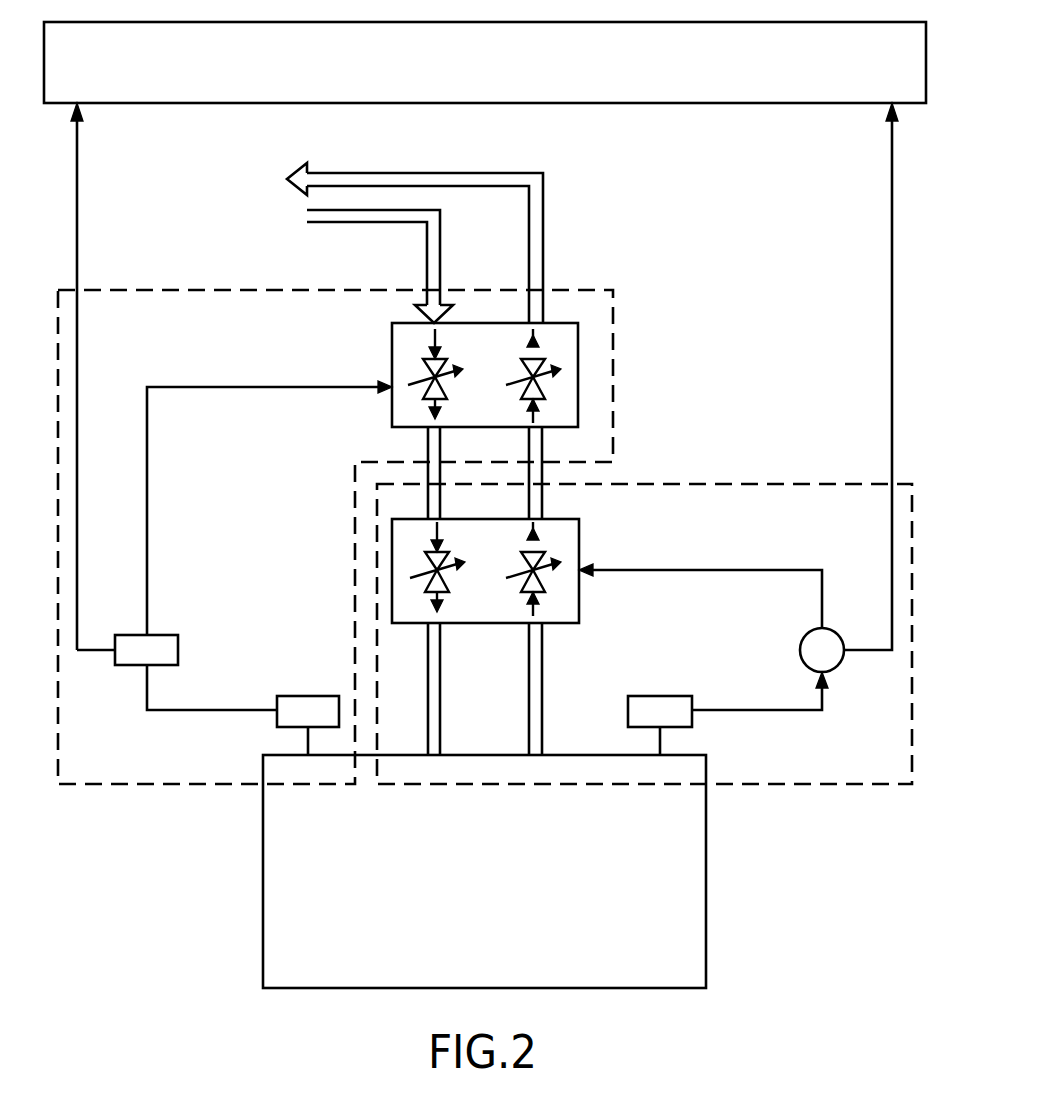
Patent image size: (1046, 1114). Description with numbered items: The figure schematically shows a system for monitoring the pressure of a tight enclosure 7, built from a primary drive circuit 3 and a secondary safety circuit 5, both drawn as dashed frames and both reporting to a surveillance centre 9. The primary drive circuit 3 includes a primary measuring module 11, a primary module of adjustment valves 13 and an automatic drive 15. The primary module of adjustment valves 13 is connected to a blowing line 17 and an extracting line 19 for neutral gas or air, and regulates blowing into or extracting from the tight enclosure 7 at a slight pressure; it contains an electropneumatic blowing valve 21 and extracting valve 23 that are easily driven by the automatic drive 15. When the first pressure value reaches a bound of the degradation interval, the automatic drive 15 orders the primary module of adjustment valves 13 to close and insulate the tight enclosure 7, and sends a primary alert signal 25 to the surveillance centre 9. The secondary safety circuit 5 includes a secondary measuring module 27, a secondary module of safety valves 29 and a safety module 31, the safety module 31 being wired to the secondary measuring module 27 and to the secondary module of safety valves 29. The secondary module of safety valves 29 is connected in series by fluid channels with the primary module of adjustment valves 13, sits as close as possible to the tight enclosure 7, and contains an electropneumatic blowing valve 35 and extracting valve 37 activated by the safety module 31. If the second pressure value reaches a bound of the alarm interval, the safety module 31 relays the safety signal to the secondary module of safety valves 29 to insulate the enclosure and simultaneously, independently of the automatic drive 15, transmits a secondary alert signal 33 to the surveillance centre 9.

The primary drive circuit 3 is at (110, 794).
The secondary safety circuit 5 is at (876, 794).
The tight enclosure 7 is at (263, 887).
The surveillance centre 9 is at (800, 105).
The primary measuring module 11 is at (310, 698).
The primary module of adjustment valves 13 is at (579, 346).
The automatic drive 15 is at (167, 650).
The blowing line 17 is at (363, 222).
The extracting line 19 is at (455, 172).
The blowing valve 21 is at (430, 386).
The extracting valve 23 is at (545, 383).
The primary alert signal 25 is at (77, 190).
The secondary measuring module 27 is at (660, 698).
The secondary module of safety valves 29 is at (579, 538).
The safety module 31 is at (831, 662).
The secondary alert signal 33 is at (892, 190).
The blowing valve 35 is at (427, 578).
The extracting valve 37 is at (545, 580).